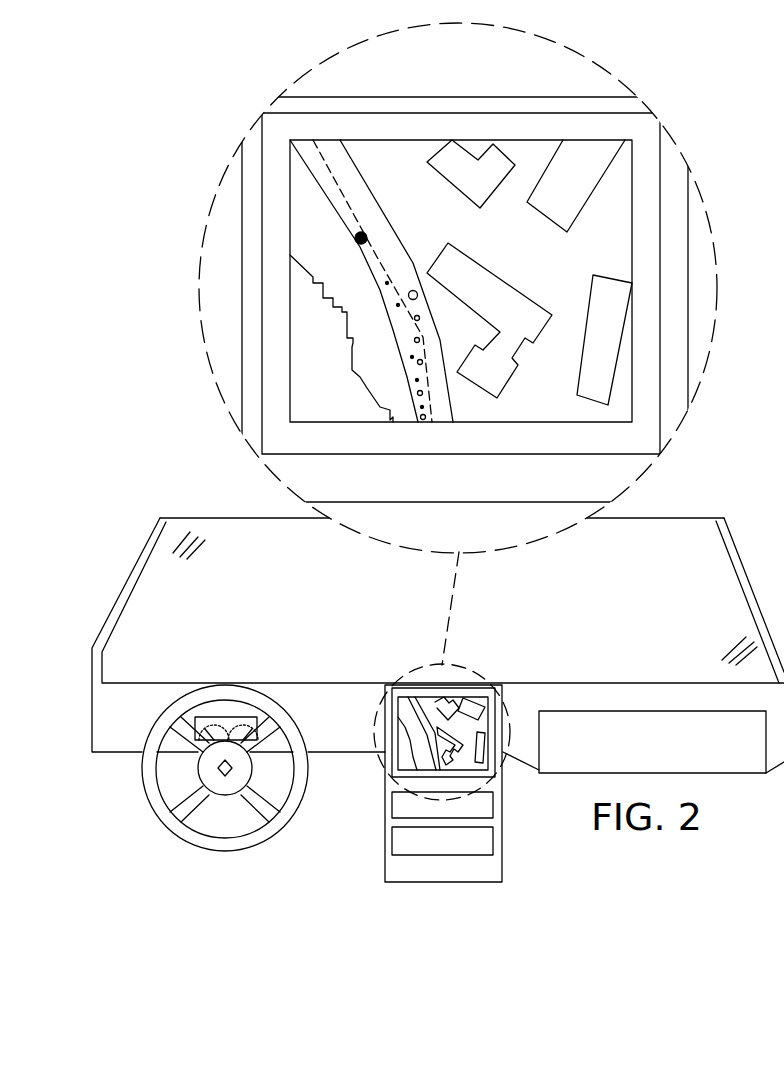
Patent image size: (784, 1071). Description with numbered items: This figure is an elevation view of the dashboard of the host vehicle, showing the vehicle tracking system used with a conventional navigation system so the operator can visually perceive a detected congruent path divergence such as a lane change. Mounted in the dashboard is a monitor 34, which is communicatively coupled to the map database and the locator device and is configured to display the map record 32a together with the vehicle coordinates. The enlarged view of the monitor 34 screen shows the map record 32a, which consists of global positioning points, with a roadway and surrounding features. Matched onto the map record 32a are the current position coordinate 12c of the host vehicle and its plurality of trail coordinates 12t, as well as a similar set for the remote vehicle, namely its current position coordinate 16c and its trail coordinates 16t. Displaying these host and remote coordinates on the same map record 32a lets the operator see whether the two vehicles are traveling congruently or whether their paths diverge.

The current position coordinate of the remote vehicle 16c is at (356, 240).
The trail coordinates of the remote vehicle 16t is at (380, 263).
The current position coordinate of the host vehicle 12c is at (405, 298).
The trail coordinates of the host vehicle 12t is at (413, 322).
The map record 32a is at (602, 265).
The monitor 34 is at (412, 698).